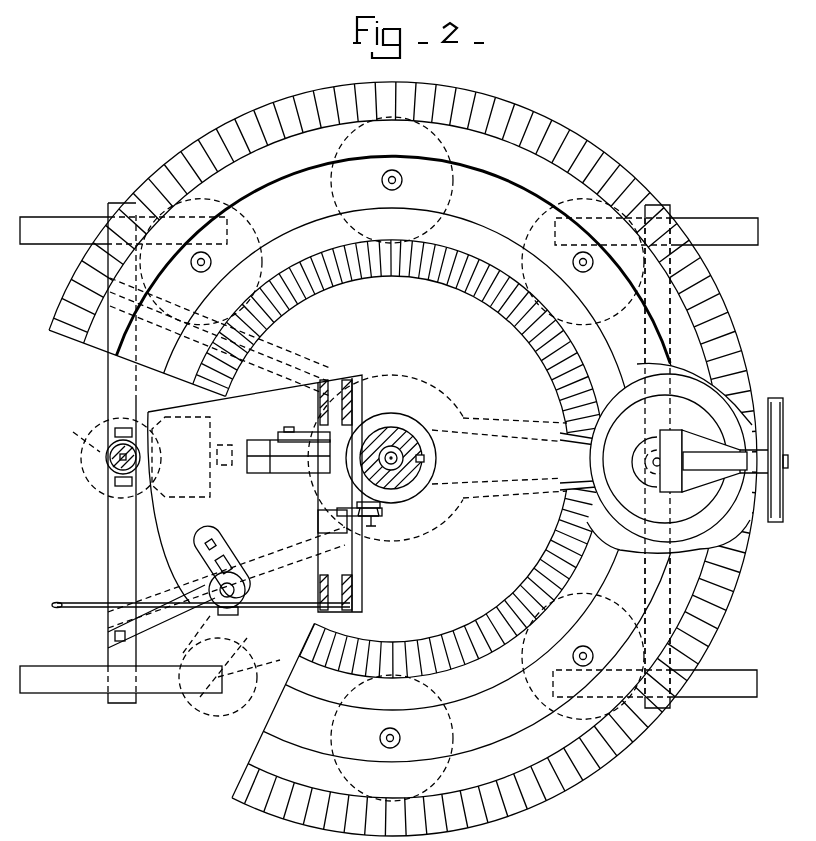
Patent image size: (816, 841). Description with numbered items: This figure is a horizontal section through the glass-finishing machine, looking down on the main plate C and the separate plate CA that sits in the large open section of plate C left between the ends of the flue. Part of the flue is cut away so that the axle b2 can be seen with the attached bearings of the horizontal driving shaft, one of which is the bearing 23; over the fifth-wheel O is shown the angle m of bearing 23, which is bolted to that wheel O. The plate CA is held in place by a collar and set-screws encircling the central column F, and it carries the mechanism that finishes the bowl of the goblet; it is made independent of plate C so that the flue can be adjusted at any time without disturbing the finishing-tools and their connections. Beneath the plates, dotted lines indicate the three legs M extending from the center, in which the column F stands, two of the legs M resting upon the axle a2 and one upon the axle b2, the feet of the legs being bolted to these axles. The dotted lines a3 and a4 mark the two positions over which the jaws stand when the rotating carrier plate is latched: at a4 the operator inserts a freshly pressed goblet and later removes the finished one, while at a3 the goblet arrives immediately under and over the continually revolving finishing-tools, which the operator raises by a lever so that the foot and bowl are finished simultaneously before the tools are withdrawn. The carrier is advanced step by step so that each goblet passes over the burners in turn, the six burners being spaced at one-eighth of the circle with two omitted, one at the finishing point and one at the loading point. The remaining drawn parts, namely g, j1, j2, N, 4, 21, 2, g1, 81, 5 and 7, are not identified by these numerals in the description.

The toothed annular rings g is at (403, 459).
The guide rollers on ring (j') j1 is at (392, 418).
The lower guide roller (j²) j2 is at (392, 738).
The supporting bars N is at (389, 457).
The axle a2 is at (108, 548).
The axle b2 is at (668, 602).
The plate CA is at (217, 493).
The guide pulleys 4 is at (320, 400).
The dotted-line position a3 is at (95, 472).
The pivot arm (2') 21 is at (240, 580).
The pivot disk 2 is at (245, 590).
The blade (g') g1 is at (88, 608).
The block (8') 81 is at (350, 520).
The dotted-line position a4 is at (214, 706).
The legs M is at (376, 453).
The central hub 5 is at (404, 432).
The hub bracket 7 is at (384, 507).
The column F is at (408, 500).
The plate C is at (471, 547).
The fifth-wheel O is at (678, 457).
The angle of bearing m is at (715, 461).
The bearing 23 is at (755, 455).